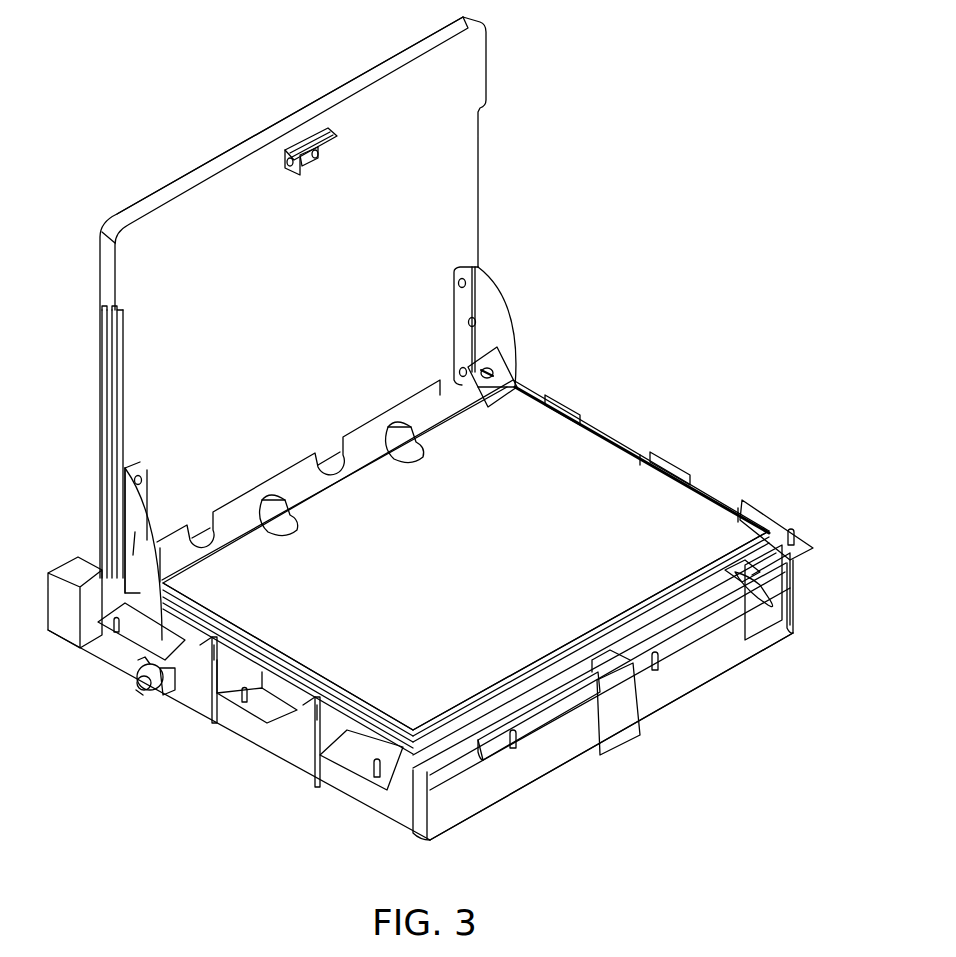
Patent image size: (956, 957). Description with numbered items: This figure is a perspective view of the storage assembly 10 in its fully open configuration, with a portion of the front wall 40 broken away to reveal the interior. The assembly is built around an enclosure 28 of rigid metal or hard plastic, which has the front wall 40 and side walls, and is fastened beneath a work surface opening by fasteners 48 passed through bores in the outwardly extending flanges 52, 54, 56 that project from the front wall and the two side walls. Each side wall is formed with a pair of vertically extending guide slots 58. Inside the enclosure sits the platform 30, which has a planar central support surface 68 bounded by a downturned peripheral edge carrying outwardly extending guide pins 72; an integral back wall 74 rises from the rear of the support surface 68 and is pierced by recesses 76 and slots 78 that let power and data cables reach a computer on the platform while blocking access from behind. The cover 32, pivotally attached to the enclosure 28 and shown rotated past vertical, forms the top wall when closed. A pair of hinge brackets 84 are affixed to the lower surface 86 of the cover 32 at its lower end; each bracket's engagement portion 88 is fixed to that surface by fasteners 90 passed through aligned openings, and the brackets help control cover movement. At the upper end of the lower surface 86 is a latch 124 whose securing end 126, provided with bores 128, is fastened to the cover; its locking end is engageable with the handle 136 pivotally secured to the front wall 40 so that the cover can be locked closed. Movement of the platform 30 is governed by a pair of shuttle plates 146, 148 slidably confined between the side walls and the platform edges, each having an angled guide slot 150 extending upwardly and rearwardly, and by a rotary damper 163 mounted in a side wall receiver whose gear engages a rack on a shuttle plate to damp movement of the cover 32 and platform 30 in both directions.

The storage assembly 10 is at (694, 297).
The enclosure 28 is at (392, 830).
The platform 30 is at (598, 475).
The cover 32 is at (458, 178).
The front wall 40 is at (745, 648).
The fasteners 48 is at (792, 532).
The flange 52 is at (690, 655).
The flange 54 is at (128, 640).
The flange 56 is at (556, 410).
The guide slots 58 is at (220, 650).
The central support surface 68 is at (482, 576).
The guide pins 72 is at (217, 640).
The back wall 74 is at (357, 445).
The recesses 76 is at (205, 540).
The slots 78 is at (465, 402).
The hinge brackets 84 is at (150, 531).
The lower surface 86 is at (466, 80).
The engagement portion 88 is at (468, 342).
The fasteners 90 is at (470, 320).
The latch 124 is at (303, 135).
The securing end 126 is at (300, 165).
The bores 128 is at (318, 154).
The handle 136 is at (623, 734).
The shuttle plate 146 is at (300, 680).
The shuttle plate 148 is at (775, 600).
The angled guide slot 150 is at (762, 625).
The rotary damper 163 is at (152, 688).